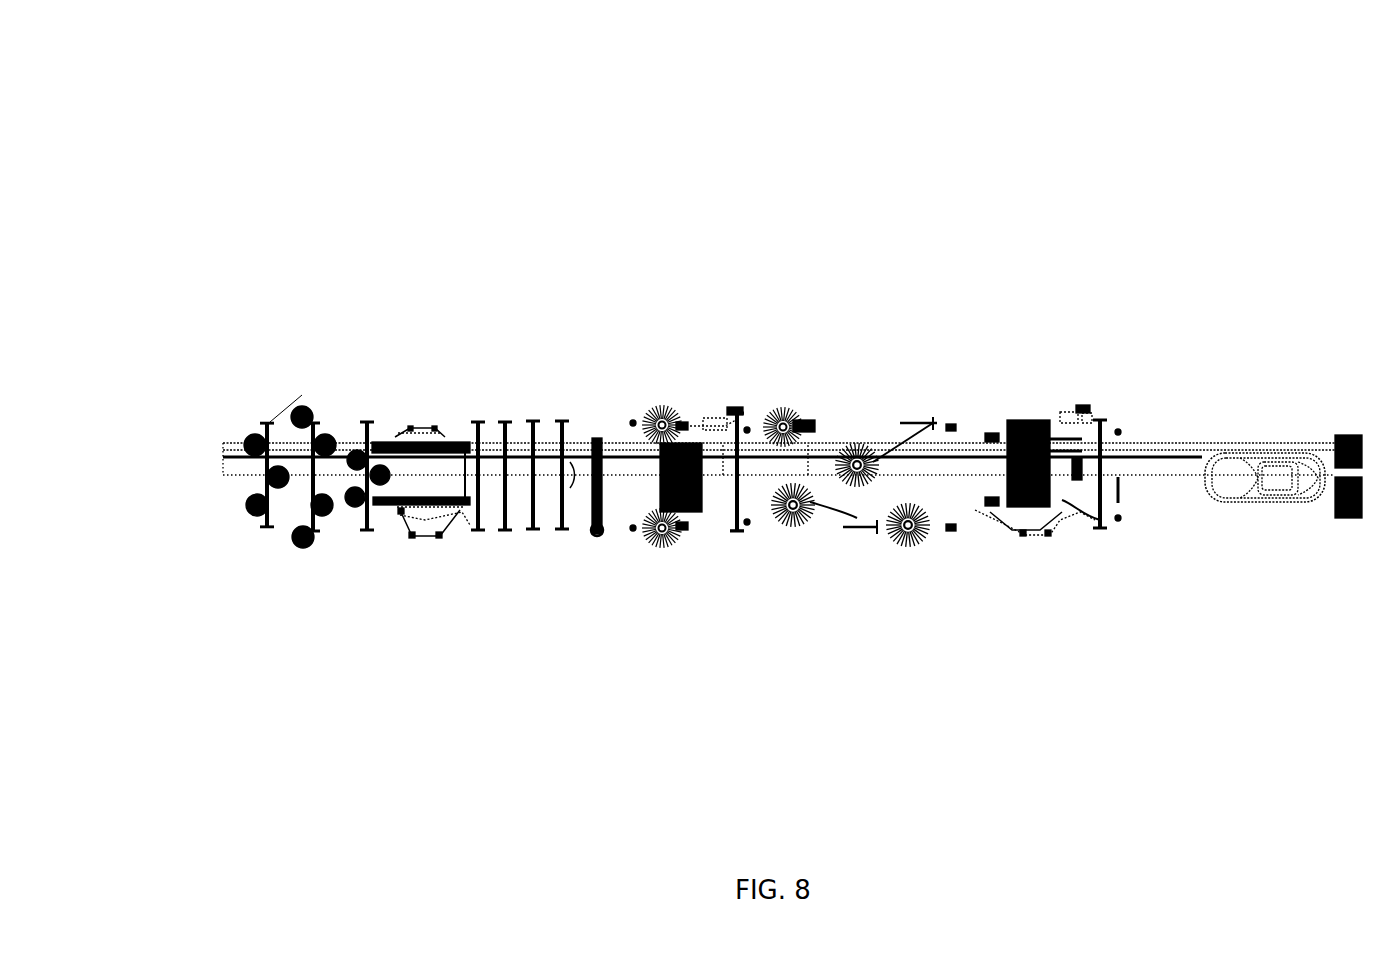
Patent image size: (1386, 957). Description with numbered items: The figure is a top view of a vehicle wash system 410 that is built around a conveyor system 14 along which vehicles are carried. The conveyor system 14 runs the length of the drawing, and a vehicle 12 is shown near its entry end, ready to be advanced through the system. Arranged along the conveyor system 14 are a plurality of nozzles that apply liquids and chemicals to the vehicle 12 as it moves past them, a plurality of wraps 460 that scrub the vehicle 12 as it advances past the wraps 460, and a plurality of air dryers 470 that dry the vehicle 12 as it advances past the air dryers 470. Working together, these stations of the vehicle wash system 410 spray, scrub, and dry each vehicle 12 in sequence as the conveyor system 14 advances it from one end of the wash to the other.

The vehicle wash system 410 is at (360, 162).
The plurality of air dryers 470 is at (317, 363).
The plurality of wraps 460 is at (862, 355).
The vehicle 12 is at (1277, 423).
The conveyor system 14 is at (222, 453).